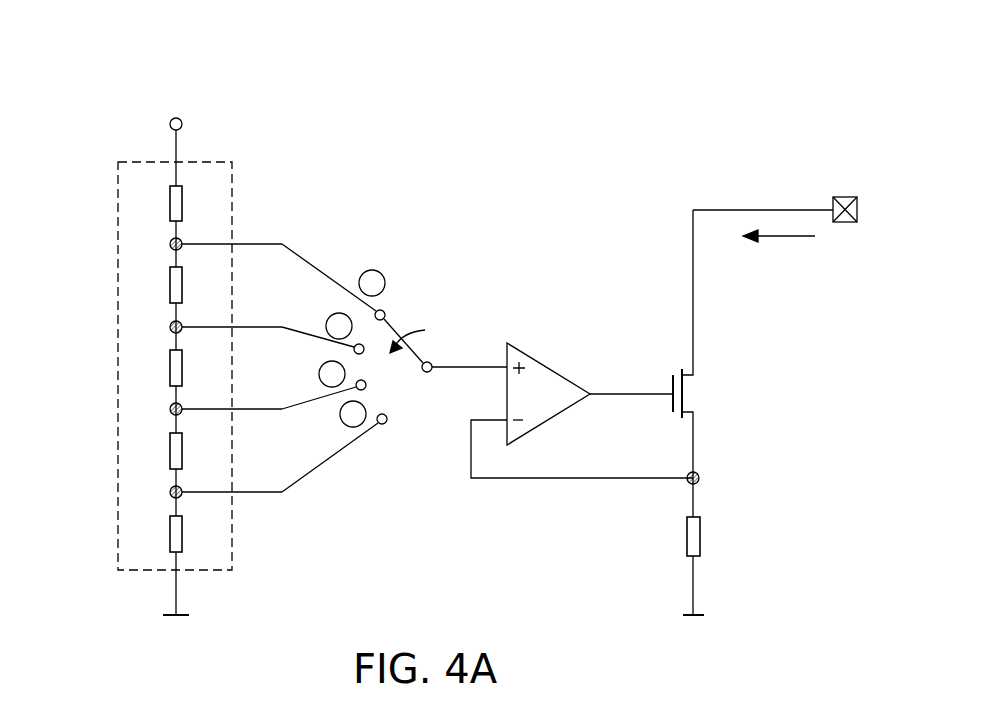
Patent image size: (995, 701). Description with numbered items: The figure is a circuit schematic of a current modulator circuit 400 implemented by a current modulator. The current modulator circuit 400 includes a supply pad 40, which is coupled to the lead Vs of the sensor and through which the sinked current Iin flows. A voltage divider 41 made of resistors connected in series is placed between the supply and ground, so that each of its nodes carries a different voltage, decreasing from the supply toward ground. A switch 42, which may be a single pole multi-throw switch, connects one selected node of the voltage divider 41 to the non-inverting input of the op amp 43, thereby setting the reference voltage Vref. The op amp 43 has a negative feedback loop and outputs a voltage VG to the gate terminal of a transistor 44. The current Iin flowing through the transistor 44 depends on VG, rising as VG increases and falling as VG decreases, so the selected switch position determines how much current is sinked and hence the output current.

The current modulator circuit 400 is at (122, 43).
The supply pad 40 is at (843, 197).
The voltage divider 41 is at (120, 355).
The switch 42 is at (392, 321).
The op amp 43 is at (537, 357).
The transistor 44 is at (695, 370).